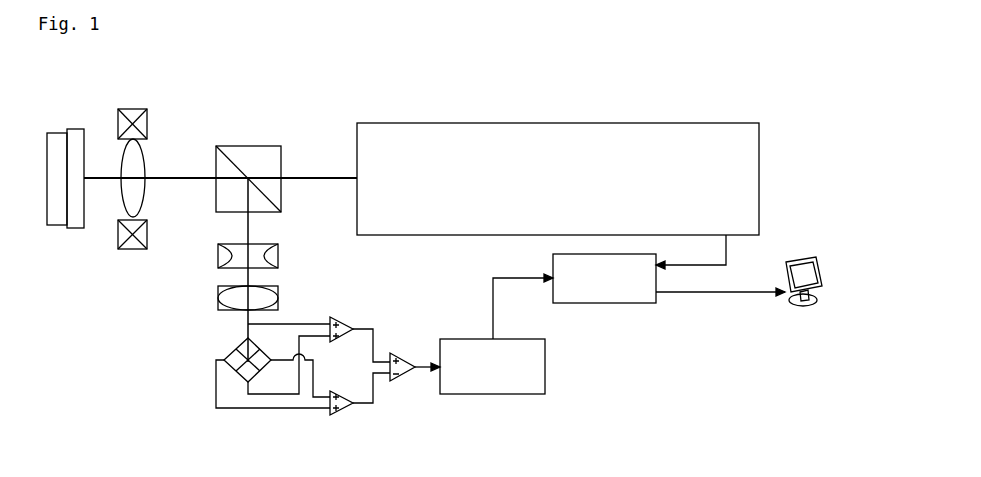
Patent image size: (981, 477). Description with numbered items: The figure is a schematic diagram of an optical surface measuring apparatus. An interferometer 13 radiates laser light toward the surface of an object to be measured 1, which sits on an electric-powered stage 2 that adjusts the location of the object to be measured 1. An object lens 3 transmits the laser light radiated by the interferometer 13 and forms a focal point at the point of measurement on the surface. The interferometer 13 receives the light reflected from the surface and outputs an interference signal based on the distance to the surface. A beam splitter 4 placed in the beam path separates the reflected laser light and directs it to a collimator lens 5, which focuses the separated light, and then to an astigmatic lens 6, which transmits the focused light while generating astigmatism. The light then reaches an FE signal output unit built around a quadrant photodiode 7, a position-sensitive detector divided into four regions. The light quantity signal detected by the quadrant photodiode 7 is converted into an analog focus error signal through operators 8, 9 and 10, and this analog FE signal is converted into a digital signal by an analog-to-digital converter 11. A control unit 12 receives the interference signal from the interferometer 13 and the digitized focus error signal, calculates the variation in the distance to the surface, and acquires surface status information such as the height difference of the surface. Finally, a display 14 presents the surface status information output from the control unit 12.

The object to be measured 1 is at (96, 143).
The electric-powered stage 2 is at (64, 136).
The object lens 3 is at (169, 160).
The beam splitter 4 is at (264, 137).
The collimator lens 5 is at (288, 255).
The astigmatic lens 6 is at (288, 296).
The quadrant photodiode 7 is at (224, 340).
The operator 8 is at (368, 302).
The operator 9 is at (362, 430).
The operator 10 is at (422, 335).
The analog-to-digital converter 11 is at (482, 377).
The control unit 12 is at (595, 288).
The interferometer 13 is at (548, 191).
The display 14 is at (807, 236).